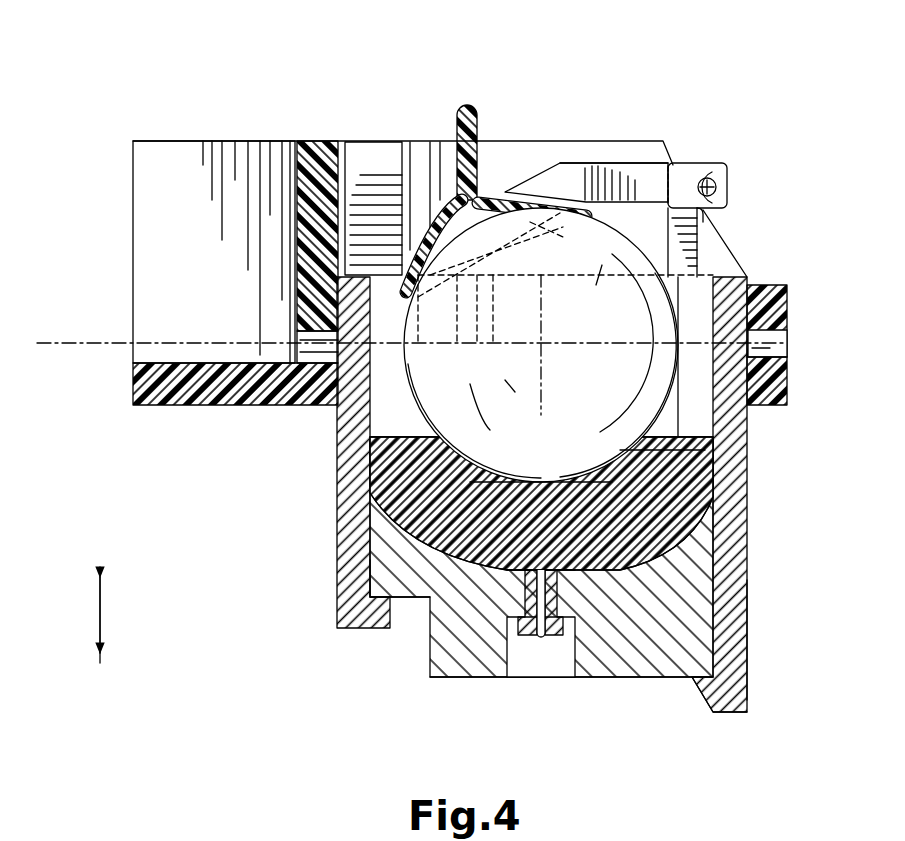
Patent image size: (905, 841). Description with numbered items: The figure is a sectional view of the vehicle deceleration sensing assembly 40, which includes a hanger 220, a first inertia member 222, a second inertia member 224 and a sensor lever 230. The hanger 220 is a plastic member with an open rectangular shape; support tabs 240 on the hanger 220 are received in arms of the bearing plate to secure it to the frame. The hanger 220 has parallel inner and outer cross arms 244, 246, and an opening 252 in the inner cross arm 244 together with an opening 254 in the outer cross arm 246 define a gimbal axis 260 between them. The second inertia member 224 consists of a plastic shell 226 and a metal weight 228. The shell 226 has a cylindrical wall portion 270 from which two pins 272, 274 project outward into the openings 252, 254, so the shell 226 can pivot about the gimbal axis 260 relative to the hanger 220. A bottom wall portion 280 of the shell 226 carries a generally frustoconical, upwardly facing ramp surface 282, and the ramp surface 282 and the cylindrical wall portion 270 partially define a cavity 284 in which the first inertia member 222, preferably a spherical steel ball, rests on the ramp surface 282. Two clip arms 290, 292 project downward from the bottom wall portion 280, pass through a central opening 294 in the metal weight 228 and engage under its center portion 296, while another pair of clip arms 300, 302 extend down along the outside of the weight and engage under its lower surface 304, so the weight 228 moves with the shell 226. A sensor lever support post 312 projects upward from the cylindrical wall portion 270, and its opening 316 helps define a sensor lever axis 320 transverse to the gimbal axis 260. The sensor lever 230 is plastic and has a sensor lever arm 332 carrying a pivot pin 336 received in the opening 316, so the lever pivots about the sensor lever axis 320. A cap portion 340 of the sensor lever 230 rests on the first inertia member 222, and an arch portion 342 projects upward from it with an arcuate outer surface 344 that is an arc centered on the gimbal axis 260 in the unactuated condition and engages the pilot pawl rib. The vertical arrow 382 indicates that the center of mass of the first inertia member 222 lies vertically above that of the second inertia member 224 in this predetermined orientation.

The vehicle deceleration sensing assembly 40 is at (510, 78).
The hanger 220 is at (131, 147).
The first inertia member 222 is at (612, 317).
The second inertia member 224 is at (751, 666).
The plastic shell 226 is at (749, 534).
The metal weight 228 is at (428, 643).
The sensor lever 230 is at (630, 146).
The support tabs 240 is at (232, 170).
The inner cross arm 244 is at (327, 152).
The outer cross arm 246 is at (780, 380).
The opening in inner cross arm 252 is at (302, 347).
The opening in outer cross arm 254 is at (773, 350).
The gimbal axis 260 is at (78, 342).
The cylindrical wall portion 270 is at (338, 456).
The pin 272 is at (307, 336).
The pin 274 is at (777, 337).
The bottom wall portion 280 is at (700, 517).
The ramp surface 282 is at (521, 487).
The cavity 284 is at (687, 307).
The clip arm 290 is at (534, 637).
The clip arm 292 is at (548, 637).
The central opening 294 is at (567, 657).
The center portion 296 is at (515, 585).
The clip arm 300 is at (345, 565).
The clip arm 302 is at (748, 588).
The lower surface 304 is at (640, 680).
The sensor lever support post 312 is at (717, 212).
The opening 316 is at (716, 188).
The sensor lever axis 320 is at (700, 195).
The sensor lever arm 332 is at (573, 175).
The pivot pin 336 is at (690, 163).
The cap portion 340 is at (529, 197).
The arch portion 342 is at (428, 160).
The arcuate outer surface 344 is at (466, 104).
The arrow 382 is at (125, 615).